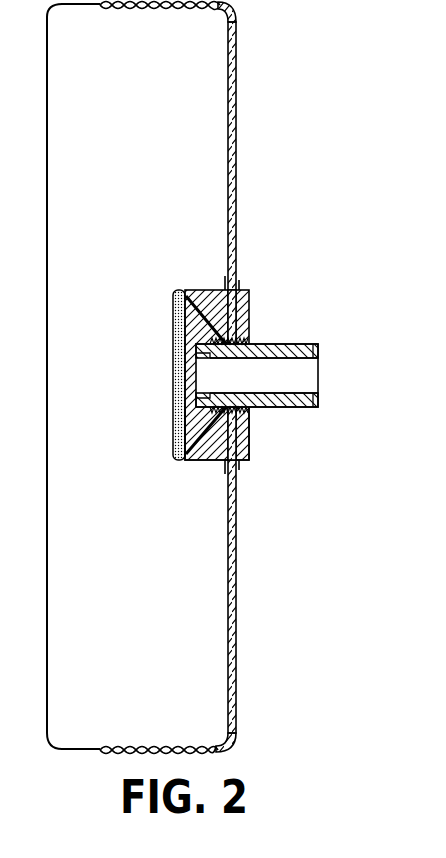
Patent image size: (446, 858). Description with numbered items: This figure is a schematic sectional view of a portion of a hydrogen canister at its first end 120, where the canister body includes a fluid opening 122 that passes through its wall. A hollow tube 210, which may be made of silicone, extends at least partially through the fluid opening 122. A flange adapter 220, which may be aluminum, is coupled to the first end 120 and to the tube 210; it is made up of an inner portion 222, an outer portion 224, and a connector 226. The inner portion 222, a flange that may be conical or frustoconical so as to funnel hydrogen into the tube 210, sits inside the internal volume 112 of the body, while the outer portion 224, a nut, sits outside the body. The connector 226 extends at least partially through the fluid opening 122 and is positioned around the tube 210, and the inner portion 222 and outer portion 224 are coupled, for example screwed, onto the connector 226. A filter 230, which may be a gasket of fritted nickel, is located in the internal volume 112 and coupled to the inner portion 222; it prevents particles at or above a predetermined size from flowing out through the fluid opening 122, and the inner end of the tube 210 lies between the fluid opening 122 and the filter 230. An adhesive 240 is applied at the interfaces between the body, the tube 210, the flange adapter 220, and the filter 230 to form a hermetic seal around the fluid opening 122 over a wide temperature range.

The internal volume 112 is at (143, 102).
The first end 120 is at (237, 48).
The fluid opening 122 is at (251, 376).
The hollow tube 210 is at (312, 343).
The flange adapter 220 is at (203, 284).
The inner portion 222 is at (205, 462).
The outer portion 224 is at (240, 463).
The connector 226 is at (250, 412).
The filter 230 is at (174, 362).
The adhesive 240 is at (193, 307).